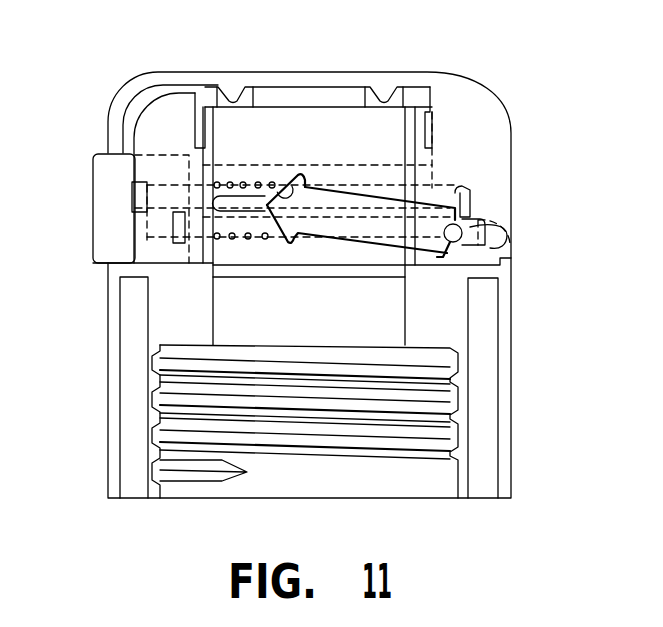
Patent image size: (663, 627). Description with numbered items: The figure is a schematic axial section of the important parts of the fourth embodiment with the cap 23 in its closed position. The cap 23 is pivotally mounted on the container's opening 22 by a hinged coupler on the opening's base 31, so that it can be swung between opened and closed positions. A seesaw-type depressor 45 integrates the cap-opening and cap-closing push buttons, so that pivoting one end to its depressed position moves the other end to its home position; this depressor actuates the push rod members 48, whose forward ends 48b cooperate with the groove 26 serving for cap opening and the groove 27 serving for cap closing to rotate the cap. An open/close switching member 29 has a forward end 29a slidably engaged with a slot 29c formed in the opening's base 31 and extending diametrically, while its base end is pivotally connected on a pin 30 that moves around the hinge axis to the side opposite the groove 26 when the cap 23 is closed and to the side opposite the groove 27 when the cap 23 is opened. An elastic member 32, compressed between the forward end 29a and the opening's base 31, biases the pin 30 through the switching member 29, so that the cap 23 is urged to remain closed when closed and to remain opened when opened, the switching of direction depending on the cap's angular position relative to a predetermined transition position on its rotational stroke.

The container's opening 22 is at (443, 72).
The cap 23 is at (490, 104).
The groove serving for cap opening 26 is at (463, 191).
The groove serving for cap closing 27 is at (510, 245).
The open/close switching member 29 is at (352, 195).
The forward end 29a is at (314, 188).
The slot 29c is at (296, 182).
The pin 30 is at (470, 247).
The opening's base 31 is at (505, 397).
The elastic member 32 is at (233, 100).
The depressor 45 is at (105, 210).
The push rod members 48 is at (162, 185).
The forward ends 48b is at (458, 186).